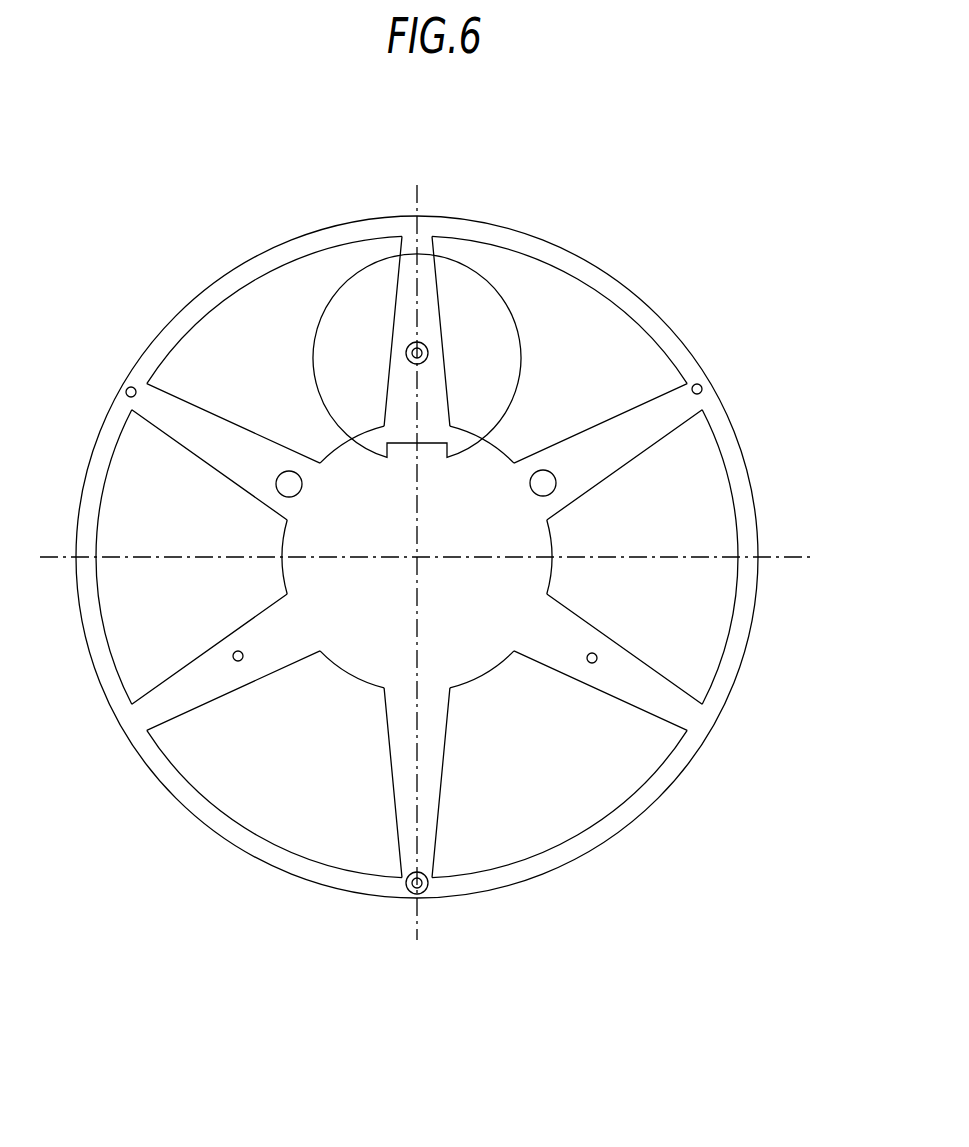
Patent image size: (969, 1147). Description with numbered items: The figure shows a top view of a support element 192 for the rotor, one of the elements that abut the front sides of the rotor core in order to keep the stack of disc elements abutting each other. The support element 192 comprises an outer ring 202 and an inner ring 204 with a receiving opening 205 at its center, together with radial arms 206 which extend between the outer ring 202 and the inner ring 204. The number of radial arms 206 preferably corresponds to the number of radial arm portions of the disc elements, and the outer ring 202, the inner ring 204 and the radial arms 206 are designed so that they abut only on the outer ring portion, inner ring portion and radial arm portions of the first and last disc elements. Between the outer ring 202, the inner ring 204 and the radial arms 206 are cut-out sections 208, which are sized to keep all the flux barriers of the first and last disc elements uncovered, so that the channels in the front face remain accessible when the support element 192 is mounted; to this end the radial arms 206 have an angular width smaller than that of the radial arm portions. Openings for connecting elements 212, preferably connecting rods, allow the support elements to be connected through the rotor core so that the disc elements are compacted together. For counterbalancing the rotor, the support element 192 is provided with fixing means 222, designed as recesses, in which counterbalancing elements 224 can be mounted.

The support element 192 is at (457, 586).
The outer ring 202 is at (743, 620).
The inner ring 204 is at (532, 577).
The receiving opening 205 is at (325, 515).
The radial arms 206 is at (607, 435).
The cut-out sections 208 is at (447, 772).
The connecting element 212 is at (550, 482).
The fixing means 222 is at (128, 388).
The counterbalancing elements 224 is at (422, 347).